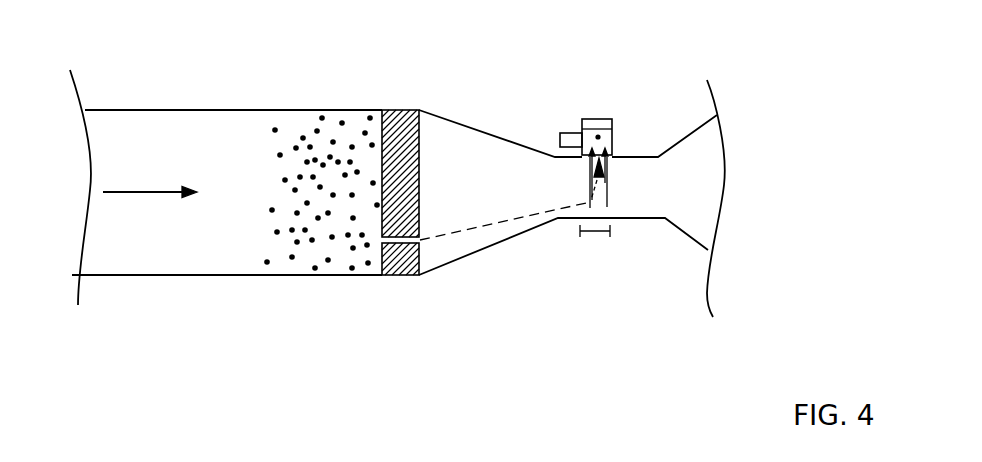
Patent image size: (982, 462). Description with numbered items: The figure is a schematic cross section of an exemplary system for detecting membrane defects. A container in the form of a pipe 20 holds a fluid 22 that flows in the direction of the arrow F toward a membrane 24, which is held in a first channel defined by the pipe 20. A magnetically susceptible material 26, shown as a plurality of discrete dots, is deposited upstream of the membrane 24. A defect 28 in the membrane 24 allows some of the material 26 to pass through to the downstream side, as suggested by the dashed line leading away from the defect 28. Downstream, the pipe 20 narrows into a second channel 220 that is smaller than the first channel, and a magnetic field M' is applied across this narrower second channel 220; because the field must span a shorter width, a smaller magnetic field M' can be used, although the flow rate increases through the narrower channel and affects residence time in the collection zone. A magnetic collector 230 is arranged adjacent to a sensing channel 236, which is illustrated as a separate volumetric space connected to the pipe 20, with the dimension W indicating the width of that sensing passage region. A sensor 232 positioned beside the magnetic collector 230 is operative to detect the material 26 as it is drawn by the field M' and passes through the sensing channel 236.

The pipe 20 is at (167, 110).
The fluid 22 is at (185, 156).
The membrane 24 is at (406, 110).
The magnetically susceptible material 26 is at (306, 275).
The defect 28 is at (412, 239).
The second channel 220 is at (621, 213).
The magnetic collector 230 is at (612, 119).
The sensor 232 is at (580, 132).
The sensing channel 236 is at (614, 143).
The direction of flow F is at (126, 192).
The channel width W is at (588, 232).
The magnetic field M' is at (635, 192).